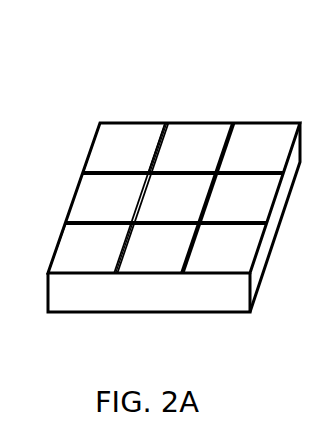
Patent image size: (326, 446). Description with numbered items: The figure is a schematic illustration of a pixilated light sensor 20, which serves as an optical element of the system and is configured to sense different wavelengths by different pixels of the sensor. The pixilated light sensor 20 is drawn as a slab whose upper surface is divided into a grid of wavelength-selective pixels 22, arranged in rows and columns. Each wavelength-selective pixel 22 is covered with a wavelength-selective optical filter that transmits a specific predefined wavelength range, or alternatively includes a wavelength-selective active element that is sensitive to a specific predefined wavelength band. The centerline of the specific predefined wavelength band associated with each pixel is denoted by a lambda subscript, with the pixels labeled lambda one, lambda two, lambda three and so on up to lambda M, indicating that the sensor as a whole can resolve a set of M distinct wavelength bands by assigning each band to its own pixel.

The pixilated light sensor 20 is at (170, 169).
The wavelength-selective pixel 22 is at (97, 183).